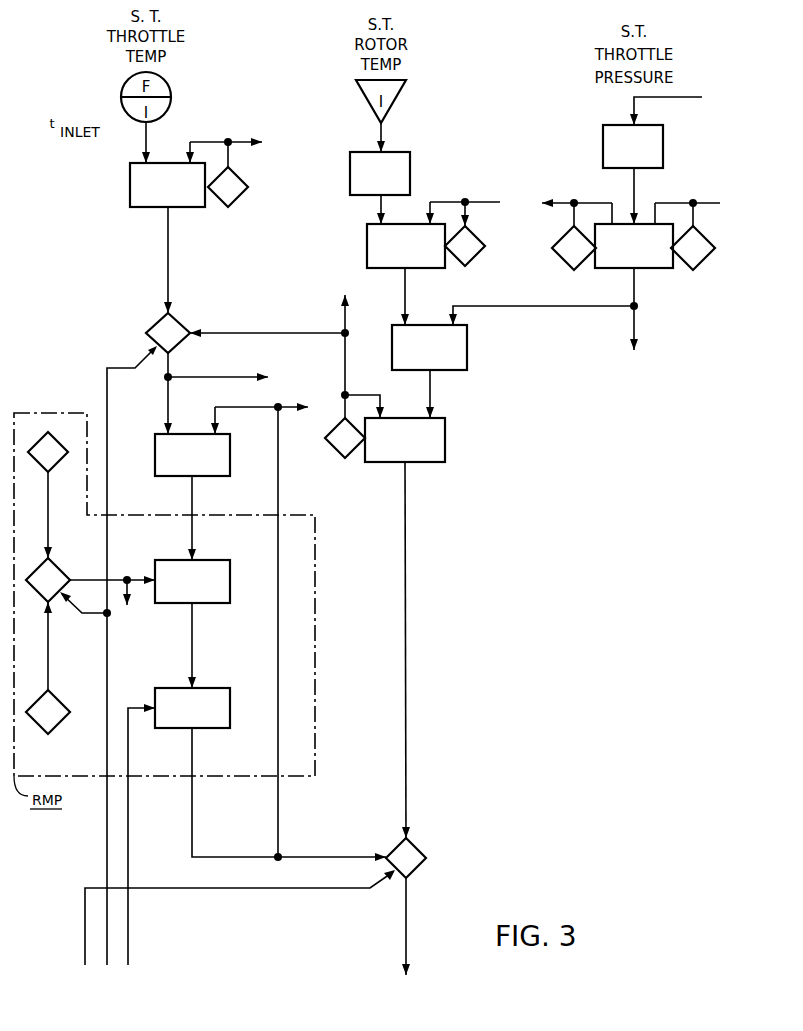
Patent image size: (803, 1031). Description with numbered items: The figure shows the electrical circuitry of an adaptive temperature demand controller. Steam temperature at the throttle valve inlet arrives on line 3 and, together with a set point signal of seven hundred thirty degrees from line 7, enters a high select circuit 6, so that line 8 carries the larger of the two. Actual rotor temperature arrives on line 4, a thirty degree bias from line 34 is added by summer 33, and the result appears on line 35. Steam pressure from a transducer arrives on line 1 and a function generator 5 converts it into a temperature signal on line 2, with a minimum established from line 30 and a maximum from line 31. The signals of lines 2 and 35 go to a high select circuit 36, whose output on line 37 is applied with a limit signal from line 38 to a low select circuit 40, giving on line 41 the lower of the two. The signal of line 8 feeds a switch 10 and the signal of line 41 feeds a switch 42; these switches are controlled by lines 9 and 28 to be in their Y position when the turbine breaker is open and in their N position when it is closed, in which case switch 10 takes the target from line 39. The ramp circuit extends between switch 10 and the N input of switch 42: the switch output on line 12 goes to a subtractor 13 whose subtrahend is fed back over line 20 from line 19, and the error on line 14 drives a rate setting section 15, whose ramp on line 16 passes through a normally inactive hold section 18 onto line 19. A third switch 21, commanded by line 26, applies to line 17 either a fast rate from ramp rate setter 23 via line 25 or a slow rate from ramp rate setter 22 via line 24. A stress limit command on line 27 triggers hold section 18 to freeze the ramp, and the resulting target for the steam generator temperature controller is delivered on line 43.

The steam pressure signal line 1 is at (634, 190).
The function generator output line 2 is at (453, 304).
The inlet steam temperature line 3 is at (142, 150).
The rotor temperature line 4 is at (375, 210).
The function generator 5 is at (650, 270).
The high select circuit 6 is at (130, 200).
The set point line 7 is at (238, 197).
The high select output line 8 is at (168, 250).
The switch control line 9 is at (140, 362).
The two-position switch 10 is at (158, 323).
The subtractor input line 12 is at (168, 402).
The subtractor 13 is at (155, 456).
The subtractor output line 14 is at (192, 497).
The rate setting section 15 is at (220, 560).
The ramp output line 16 is at (192, 636).
The ramp rate input line 17 is at (118, 578).
The hold section 18 is at (232, 708).
The ramp circuit output line 19 is at (192, 822).
The feedback line 20 is at (278, 793).
The third switch 21 is at (40, 598).
The ramp rate setter 22 is at (42, 727).
The ramp rate setter 23 is at (40, 470).
The slow rate line 24 is at (48, 656).
The fast rate line 25 is at (48, 513).
The switch control line 26 is at (107, 616).
The hold command line 27 is at (128, 818).
The switch control line 28 is at (250, 890).
The minimum temperature line 30 is at (562, 240).
The maximum temperature line 31 is at (704, 262).
The summer 33 is at (367, 252).
The bias line 34 is at (476, 234).
The summer output line 35 is at (405, 298).
The high select circuit 36 is at (467, 346).
The high select output line 37 is at (430, 394).
The limit signal line 38 is at (336, 456).
The target temperature line 39 is at (238, 333).
The low select circuit 40 is at (445, 440).
The low select output line 41 is at (406, 633).
The two-position switch 42 is at (418, 848).
The output line 43 is at (406, 906).